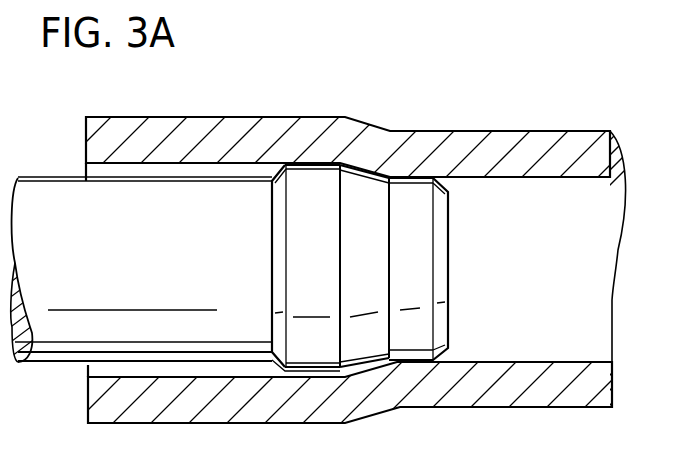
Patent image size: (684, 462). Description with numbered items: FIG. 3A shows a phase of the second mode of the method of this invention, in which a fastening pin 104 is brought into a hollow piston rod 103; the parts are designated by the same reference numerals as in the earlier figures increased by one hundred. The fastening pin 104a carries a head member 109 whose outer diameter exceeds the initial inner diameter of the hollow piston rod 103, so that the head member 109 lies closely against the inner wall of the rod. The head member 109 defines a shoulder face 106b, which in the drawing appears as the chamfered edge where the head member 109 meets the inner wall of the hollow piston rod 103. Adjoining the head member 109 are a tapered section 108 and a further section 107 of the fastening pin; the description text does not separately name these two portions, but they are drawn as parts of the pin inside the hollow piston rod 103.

The hollow piston rod 103 is at (536, 152).
The fastening pin 104 is at (40, 190).
The fastening pin 104a is at (173, 197).
The shoulder face 106b is at (272, 166).
The insert section of coupling 107 is at (412, 232).
The tapered transition section 108 is at (369, 168).
The head member 109 is at (307, 242).